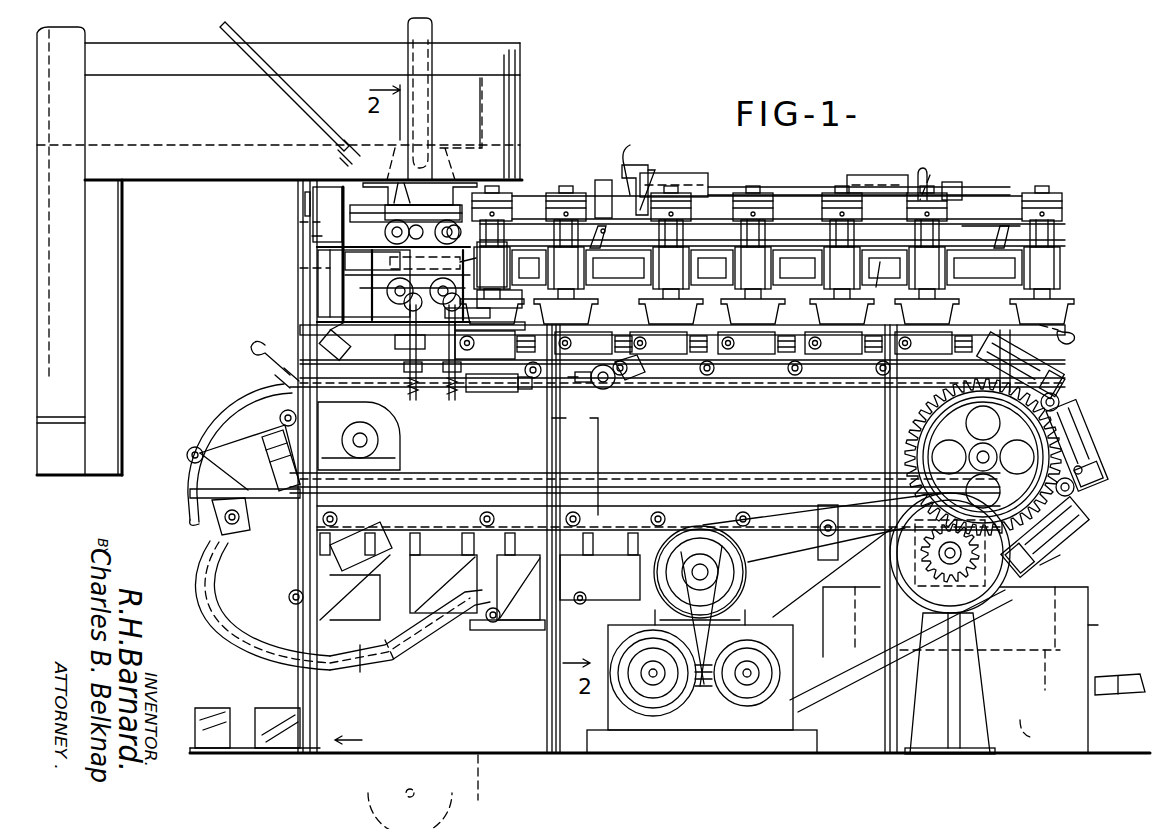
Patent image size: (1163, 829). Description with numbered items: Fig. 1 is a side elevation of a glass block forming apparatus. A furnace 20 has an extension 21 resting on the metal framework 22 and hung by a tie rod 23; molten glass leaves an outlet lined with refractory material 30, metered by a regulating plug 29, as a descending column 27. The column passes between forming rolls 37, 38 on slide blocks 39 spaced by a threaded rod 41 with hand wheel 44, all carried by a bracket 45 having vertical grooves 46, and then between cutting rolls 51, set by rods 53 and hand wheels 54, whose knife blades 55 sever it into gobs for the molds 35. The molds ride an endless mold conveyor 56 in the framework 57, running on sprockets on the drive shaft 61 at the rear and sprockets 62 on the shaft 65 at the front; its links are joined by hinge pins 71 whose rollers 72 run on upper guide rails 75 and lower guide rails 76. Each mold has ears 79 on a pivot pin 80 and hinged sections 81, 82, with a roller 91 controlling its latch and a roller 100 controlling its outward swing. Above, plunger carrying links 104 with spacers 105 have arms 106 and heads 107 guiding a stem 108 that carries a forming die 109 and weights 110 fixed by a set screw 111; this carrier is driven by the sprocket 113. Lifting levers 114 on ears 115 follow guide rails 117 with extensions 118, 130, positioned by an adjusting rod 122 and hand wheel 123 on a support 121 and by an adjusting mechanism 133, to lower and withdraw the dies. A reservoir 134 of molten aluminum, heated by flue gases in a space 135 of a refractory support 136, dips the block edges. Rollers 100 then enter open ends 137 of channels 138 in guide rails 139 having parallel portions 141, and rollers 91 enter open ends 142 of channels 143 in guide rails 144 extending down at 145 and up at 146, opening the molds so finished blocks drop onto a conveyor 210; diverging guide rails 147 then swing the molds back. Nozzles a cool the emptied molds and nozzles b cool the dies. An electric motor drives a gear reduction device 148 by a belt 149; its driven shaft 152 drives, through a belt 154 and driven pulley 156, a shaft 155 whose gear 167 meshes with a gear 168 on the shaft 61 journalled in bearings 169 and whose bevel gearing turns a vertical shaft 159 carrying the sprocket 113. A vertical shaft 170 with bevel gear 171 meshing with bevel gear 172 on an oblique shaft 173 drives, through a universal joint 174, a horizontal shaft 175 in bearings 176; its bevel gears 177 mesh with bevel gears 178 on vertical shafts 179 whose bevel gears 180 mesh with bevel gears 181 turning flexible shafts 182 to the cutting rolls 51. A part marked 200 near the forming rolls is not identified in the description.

The glass melting furnace 20 is at (122, 326).
The boot or extension 21 is at (512, 92).
The metal framework 22 is at (120, 254).
The tie rod 23 is at (240, 28).
The descending column 27 is at (436, 186).
The regulating plug 29 is at (434, 34).
The refractory material 30 is at (444, 205).
The mold 35 is at (1073, 552).
The forming roll 37 is at (385, 234).
The forming roll 38 is at (425, 260).
The supporting slide block 39 is at (394, 186).
The elongated rod 41 is at (406, 205).
The hand wheel 44 is at (304, 203).
The bracket 45 is at (312, 236).
The vertical grooves 46 is at (300, 222).
The cutting roll 51 is at (386, 300).
The adjusting rod 53 is at (372, 261).
The hand wheel 54 is at (300, 268).
The knife blade 55 is at (478, 275).
The endless mold conveyor 56 is at (752, 390).
The framework 57 is at (300, 330).
The transverse drive shaft 61 is at (990, 457).
The sprocket 62 is at (420, 462).
The shaft 65 is at (353, 440).
The hinge pin 71 is at (280, 418).
The outer roller 72 is at (876, 370).
The upper guide rails 75 is at (761, 400).
The lower guide rails 76 is at (780, 530).
The attachment ears 79 is at (479, 547).
The pivot pin 80 is at (268, 445).
The mold section 81 is at (244, 520).
The mold section 82 is at (422, 522).
The roller 91 is at (240, 522).
The roller 100 is at (640, 346).
The plunger carrying link 104 is at (990, 290).
The spacing link 105 is at (795, 293).
The plunger carrying arm 106 is at (1060, 257).
The enlarged head 107 is at (1068, 275).
The vertical stem 108 is at (765, 232).
The forming die 109 is at (690, 310).
The removable weights 110 is at (548, 192).
The set screw 111 is at (822, 214).
The driving sprocket 113 is at (881, 285).
The lifting lever 114 is at (552, 226).
The attachment ears 115 is at (558, 244).
The guide rail 117 is at (711, 210).
The adjustable extension 118 is at (624, 166).
The elongated support 121 is at (816, 186).
The adjusting rod 122 is at (690, 173).
The hand wheel 123 is at (628, 150).
The adjustable extension 130 is at (943, 174).
The adjusting mechanism 133 is at (880, 174).
The reservoir 134 is at (1080, 603).
The space 135 is at (1044, 733).
The refractory support 136 is at (1108, 627).
The open end 137 is at (862, 551).
The channel 138 is at (790, 570).
The guide rail 139 is at (528, 633).
The parallel portion 141 is at (498, 630).
The open end 142 is at (513, 588).
The channel 143 is at (401, 657).
The guide rail 144 is at (394, 648).
The downward portion 145 is at (374, 669).
The upward portion 146 is at (210, 562).
The diverging guide rail 147 is at (232, 410).
The gear reduction device 148 is at (725, 726).
The belt 149 is at (700, 606).
The driven shaft 152 is at (748, 690).
The belt 154 is at (808, 678).
The short transverse shaft 155 is at (950, 553).
The driven pulley 156 is at (995, 598).
The vertically extending shaft 159 is at (970, 182).
The gear 167 is at (1045, 568).
The gear 168 is at (1100, 445).
The bearings 169 is at (983, 457).
The vertically extending shaft 170 is at (595, 192).
The bevel gear 171 is at (630, 382).
The bevel gear 172 is at (609, 390).
The oblique shaft 173 is at (580, 400).
The universal joint 174 is at (520, 392).
The horizontal shaft 175 is at (450, 398).
The bearings 176 is at (480, 375).
The bevel gears 177 is at (408, 400).
The bevel gears 178 is at (463, 345).
The vertically extending shafts 179 is at (490, 328).
The bevel gears 180 is at (480, 314).
The bevel gears 181 is at (523, 300).
The flexible shafts 182 is at (416, 295).
The pinion 200 is at (444, 234).
The conveyor 210 is at (376, 748).
The nozzles a is at (259, 354).
The nozzles b is at (1080, 342).